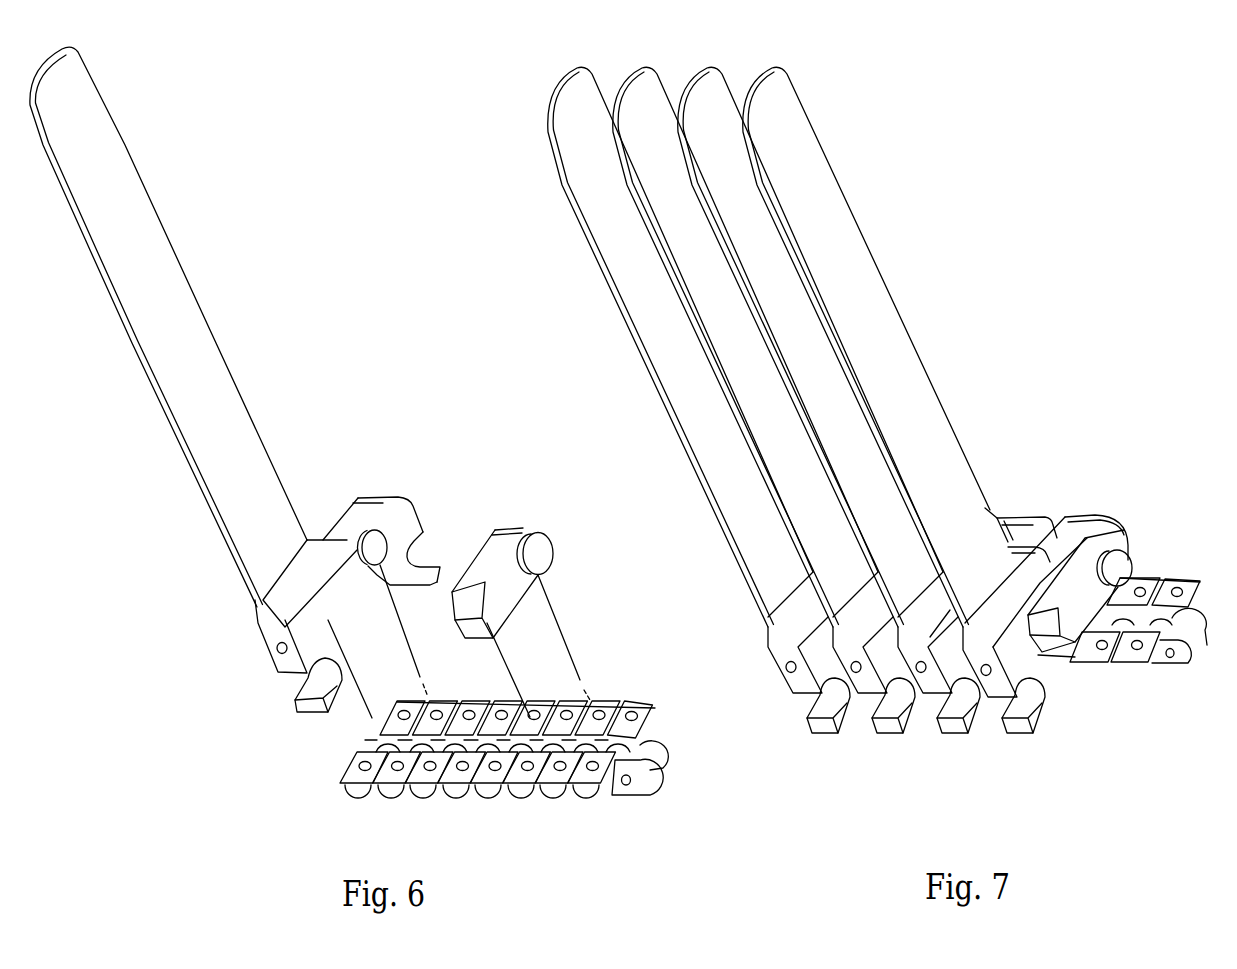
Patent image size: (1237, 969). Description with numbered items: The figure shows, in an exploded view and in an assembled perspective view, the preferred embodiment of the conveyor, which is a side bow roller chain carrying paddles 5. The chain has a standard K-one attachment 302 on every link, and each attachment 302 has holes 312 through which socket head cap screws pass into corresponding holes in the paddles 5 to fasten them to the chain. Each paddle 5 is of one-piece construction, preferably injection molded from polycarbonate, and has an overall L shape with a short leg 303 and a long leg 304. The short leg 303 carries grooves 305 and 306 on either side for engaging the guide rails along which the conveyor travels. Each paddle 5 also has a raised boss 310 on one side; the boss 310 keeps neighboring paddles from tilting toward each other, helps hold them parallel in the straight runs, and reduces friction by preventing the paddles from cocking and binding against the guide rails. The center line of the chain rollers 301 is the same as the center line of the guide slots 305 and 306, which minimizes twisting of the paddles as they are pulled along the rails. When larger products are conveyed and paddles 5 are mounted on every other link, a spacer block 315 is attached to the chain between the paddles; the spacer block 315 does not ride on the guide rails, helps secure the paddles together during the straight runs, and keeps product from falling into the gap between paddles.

In FIG. 6, the paddle 5 is at (202, 327).
In FIG. 7, the paddle 5 is at (873, 275).
In FIG. 6, the long leg 304 is at (200, 343).
In FIG. 6, the raised boss 310 is at (377, 543).
In FIG. 6, the short leg 303 is at (434, 519).
In FIG. 6, the groove 306 is at (417, 553).
In FIG. 6, the spacer block 315 is at (536, 534).
In FIG. 6, the groove 305 is at (318, 678).
In FIG. 6, the chain roller 301 is at (553, 721).
In FIG. 6, the K-1 attachment 302 is at (674, 678).
In FIG. 6, the hole 312 is at (633, 716).